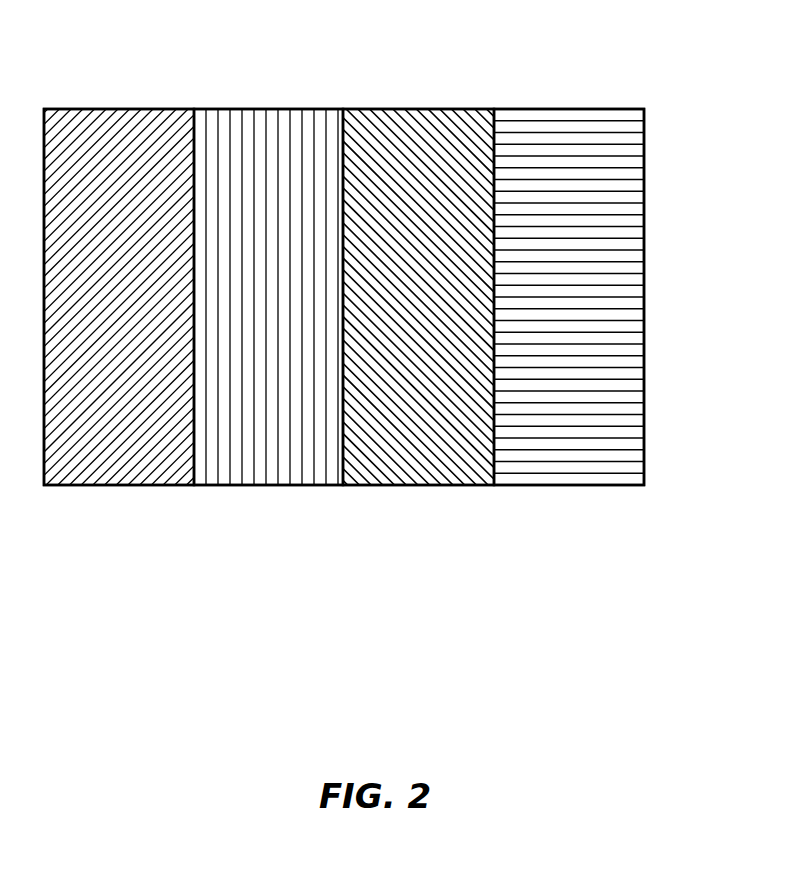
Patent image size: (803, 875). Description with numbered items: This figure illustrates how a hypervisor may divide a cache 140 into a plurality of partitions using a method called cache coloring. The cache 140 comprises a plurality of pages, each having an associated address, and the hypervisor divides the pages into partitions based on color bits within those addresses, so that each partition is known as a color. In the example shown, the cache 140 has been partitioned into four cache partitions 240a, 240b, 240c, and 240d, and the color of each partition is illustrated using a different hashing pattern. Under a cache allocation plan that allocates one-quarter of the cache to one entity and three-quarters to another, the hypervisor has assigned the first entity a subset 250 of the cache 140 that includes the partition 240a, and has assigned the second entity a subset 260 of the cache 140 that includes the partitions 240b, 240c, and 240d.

The cache 140 is at (353, 698).
The cache partition 240a is at (110, 109).
The cache partition 240b is at (266, 109).
The cache partition 240c is at (410, 109).
The cache partition 240d is at (572, 109).
The subset of the cache 250 is at (194, 485).
The subset of the cache 260 is at (194, 485).